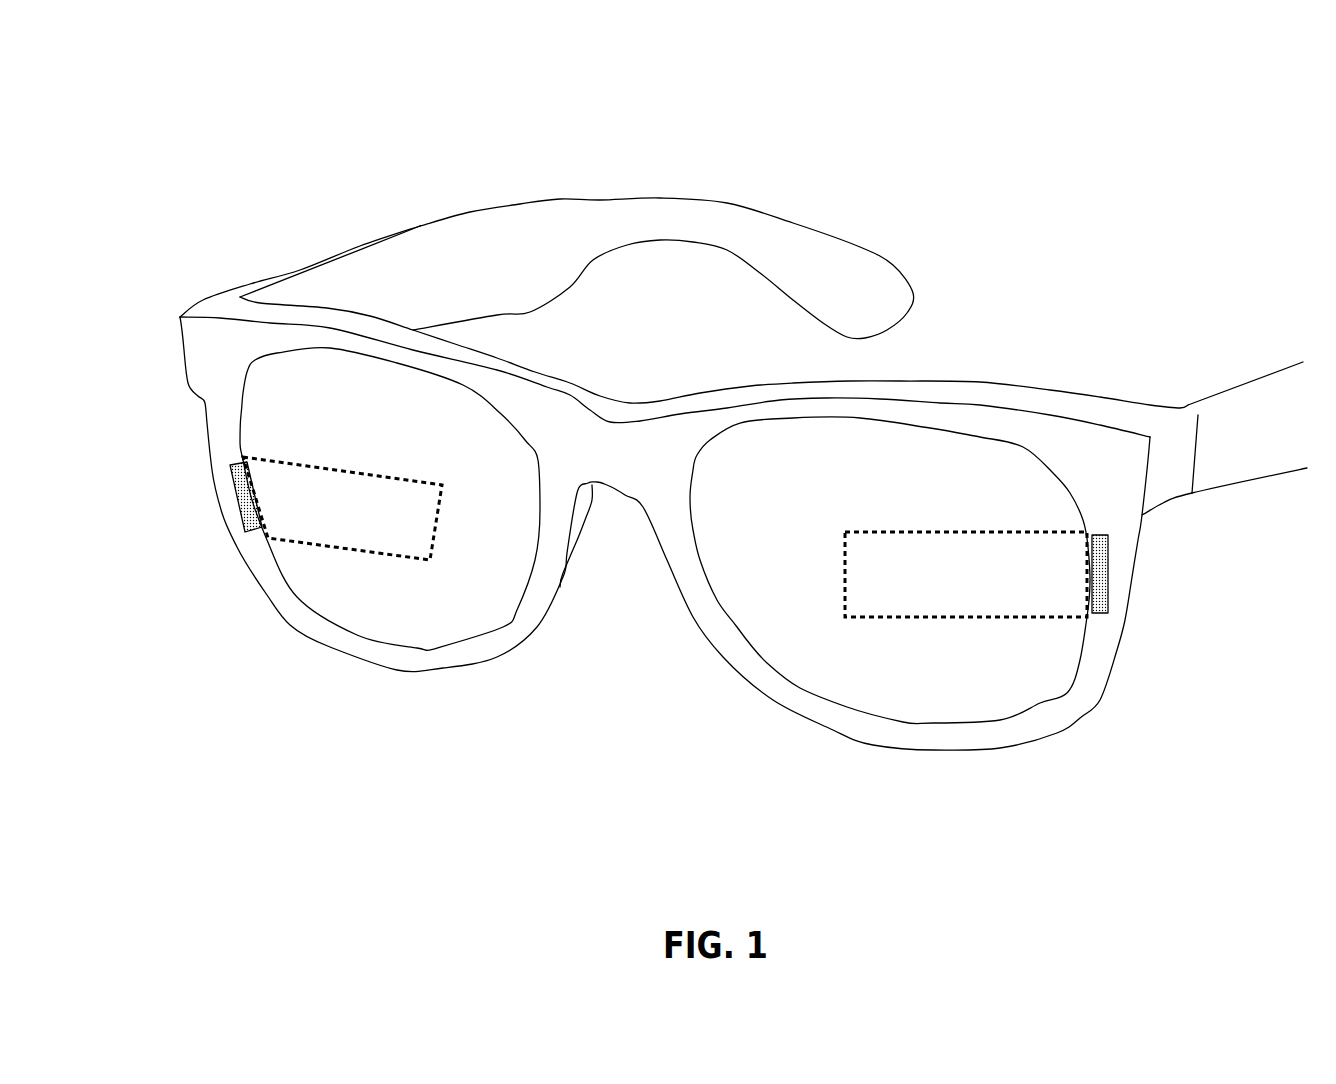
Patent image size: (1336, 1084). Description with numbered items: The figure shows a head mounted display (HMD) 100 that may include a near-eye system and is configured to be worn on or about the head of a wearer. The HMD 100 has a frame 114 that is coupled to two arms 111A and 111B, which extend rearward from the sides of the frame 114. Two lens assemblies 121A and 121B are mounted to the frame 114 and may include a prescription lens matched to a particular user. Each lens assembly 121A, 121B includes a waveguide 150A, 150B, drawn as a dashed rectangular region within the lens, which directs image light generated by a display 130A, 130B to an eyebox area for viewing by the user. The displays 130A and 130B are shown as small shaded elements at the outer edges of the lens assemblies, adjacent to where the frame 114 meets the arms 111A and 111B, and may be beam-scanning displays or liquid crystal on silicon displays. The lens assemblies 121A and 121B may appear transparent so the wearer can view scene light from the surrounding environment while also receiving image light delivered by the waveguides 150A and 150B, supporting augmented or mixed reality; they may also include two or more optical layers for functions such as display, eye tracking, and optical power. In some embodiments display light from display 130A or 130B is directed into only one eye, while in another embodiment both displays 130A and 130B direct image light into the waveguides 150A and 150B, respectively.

The head mounted display 100 is at (1264, 66).
The arm 111A is at (528, 281).
The arm 111B is at (1266, 448).
The frame 114 is at (233, 357).
The lens assembly 121A is at (508, 540).
The lens assembly 121B is at (919, 490).
The display 130A is at (243, 502).
The display 130B is at (1108, 578).
The waveguide 150A is at (277, 460).
The waveguide 150B is at (1087, 617).